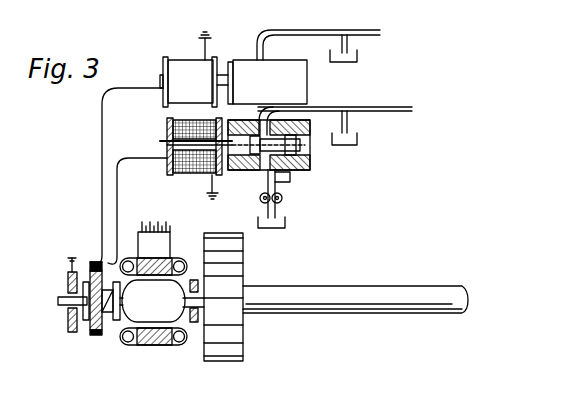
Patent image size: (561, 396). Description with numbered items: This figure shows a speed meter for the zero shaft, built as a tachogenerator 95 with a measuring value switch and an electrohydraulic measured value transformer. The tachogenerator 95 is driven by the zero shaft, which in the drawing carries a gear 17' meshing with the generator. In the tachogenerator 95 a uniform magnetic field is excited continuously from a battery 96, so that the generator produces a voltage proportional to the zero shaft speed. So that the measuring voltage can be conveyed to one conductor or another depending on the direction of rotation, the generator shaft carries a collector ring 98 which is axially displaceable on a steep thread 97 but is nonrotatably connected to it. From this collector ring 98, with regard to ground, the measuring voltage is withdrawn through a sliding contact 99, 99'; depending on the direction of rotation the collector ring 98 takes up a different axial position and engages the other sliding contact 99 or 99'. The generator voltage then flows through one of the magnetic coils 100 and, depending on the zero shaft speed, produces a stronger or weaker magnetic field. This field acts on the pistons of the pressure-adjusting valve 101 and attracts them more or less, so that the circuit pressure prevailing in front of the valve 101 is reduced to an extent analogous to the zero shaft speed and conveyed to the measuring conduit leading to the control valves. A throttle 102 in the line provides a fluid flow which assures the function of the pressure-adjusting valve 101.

The throttle 102 is at (347, 122).
The pressure-adjusting valve 101 is at (310, 165).
The magnetic coil 100 is at (193, 176).
The sliding contact 99 is at (82, 230).
The sliding contact 99' is at (71, 240).
The collector ring 98 is at (94, 335).
The steep thread 97 is at (107, 314).
The battery 96 is at (148, 224).
The tachogenerator 95 is at (150, 351).
The gear 17' is at (253, 297).